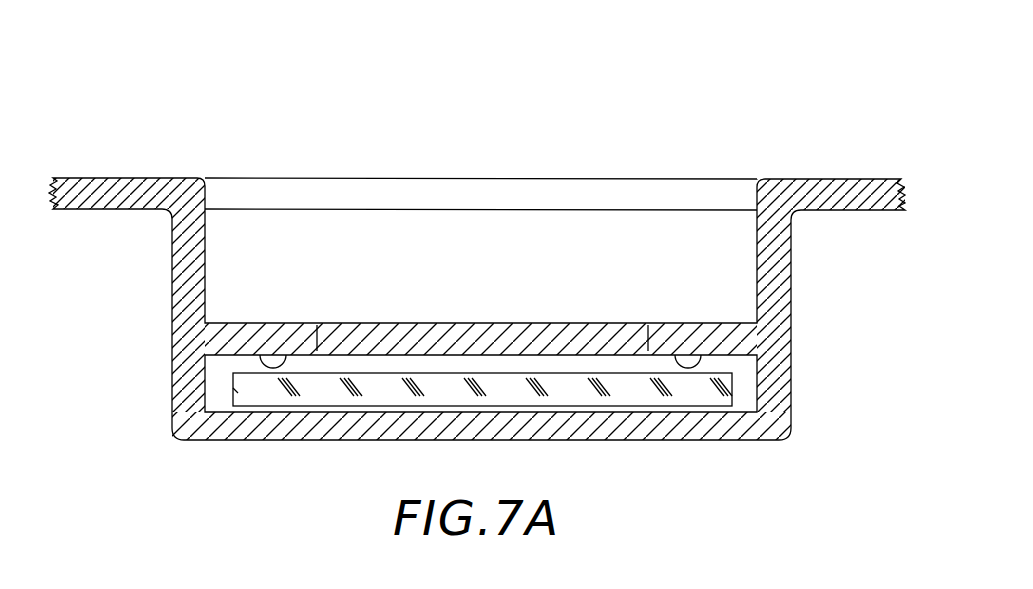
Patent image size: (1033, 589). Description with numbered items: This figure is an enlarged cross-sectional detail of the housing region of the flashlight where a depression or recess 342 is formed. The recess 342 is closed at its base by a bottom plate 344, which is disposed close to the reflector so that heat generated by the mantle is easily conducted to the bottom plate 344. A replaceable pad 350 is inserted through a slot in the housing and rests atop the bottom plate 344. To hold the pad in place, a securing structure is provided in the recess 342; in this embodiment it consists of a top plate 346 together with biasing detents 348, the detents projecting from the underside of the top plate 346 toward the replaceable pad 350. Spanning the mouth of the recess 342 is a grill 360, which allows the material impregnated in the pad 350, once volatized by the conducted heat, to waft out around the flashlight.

The recess 342 is at (756, 260).
The bottom plate 344 is at (645, 441).
The top plate 346 is at (702, 323).
The biasing detents 348 is at (270, 363).
The replaceable pad 350 is at (558, 382).
The grill 360 is at (305, 178).